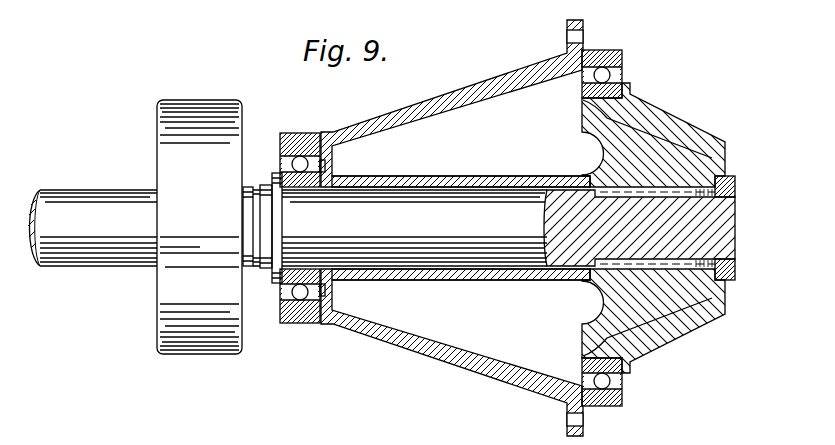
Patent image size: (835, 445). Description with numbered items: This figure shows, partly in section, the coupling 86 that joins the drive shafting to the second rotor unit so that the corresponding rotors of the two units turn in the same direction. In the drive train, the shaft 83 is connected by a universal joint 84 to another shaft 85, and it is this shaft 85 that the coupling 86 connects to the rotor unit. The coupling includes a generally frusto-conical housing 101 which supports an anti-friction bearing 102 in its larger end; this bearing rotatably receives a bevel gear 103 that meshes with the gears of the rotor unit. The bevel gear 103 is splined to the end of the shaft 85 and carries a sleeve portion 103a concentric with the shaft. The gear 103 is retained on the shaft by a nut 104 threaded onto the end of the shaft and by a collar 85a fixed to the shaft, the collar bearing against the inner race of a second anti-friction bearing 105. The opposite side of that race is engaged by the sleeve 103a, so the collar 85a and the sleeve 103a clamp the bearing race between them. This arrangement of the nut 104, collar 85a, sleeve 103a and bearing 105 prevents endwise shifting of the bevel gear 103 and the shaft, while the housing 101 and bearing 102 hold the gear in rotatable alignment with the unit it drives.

The shaft 83 is at (107, 188).
The universal joint 84 is at (217, 82).
The shaft 85 is at (263, 185).
The collar 85a is at (278, 284).
The coupling 86 is at (473, 84).
The frusto-conical housing 101 is at (490, 371).
The anti-friction bearing 102 is at (622, 400).
The bevel gear 103 is at (677, 328).
The sleeve portion 103a is at (446, 176).
The nut 104 is at (767, 163).
The anti-friction bearing 105 is at (292, 141).